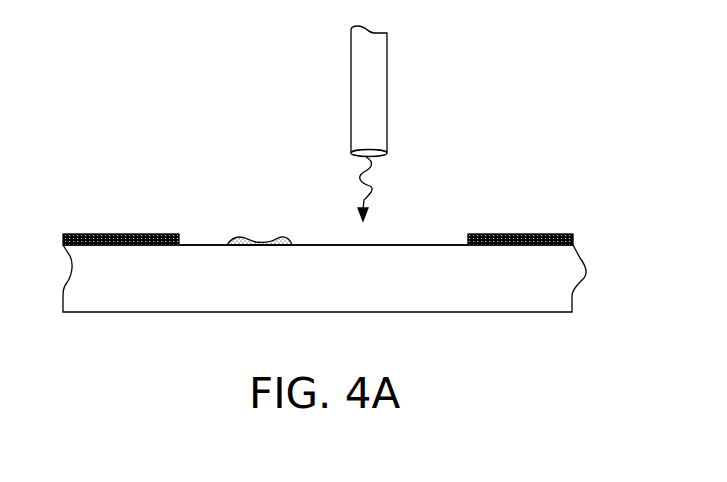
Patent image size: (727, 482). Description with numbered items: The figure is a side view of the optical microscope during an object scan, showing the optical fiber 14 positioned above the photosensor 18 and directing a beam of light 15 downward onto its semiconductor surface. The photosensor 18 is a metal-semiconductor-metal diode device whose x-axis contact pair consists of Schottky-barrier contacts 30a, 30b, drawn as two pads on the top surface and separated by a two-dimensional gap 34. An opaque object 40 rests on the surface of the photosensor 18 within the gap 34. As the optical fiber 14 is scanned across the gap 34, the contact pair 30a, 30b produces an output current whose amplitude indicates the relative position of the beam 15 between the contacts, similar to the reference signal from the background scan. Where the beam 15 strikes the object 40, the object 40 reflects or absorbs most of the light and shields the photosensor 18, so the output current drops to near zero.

The optical fiber 14 is at (387, 108).
The beam of light 15 is at (370, 194).
The photosensor 18 is at (586, 270).
The Schottky-barrier contact 30a is at (130, 234).
The Schottky-barrier contact 30b is at (538, 234).
The gap 34 is at (392, 244).
The object 40 is at (246, 240).